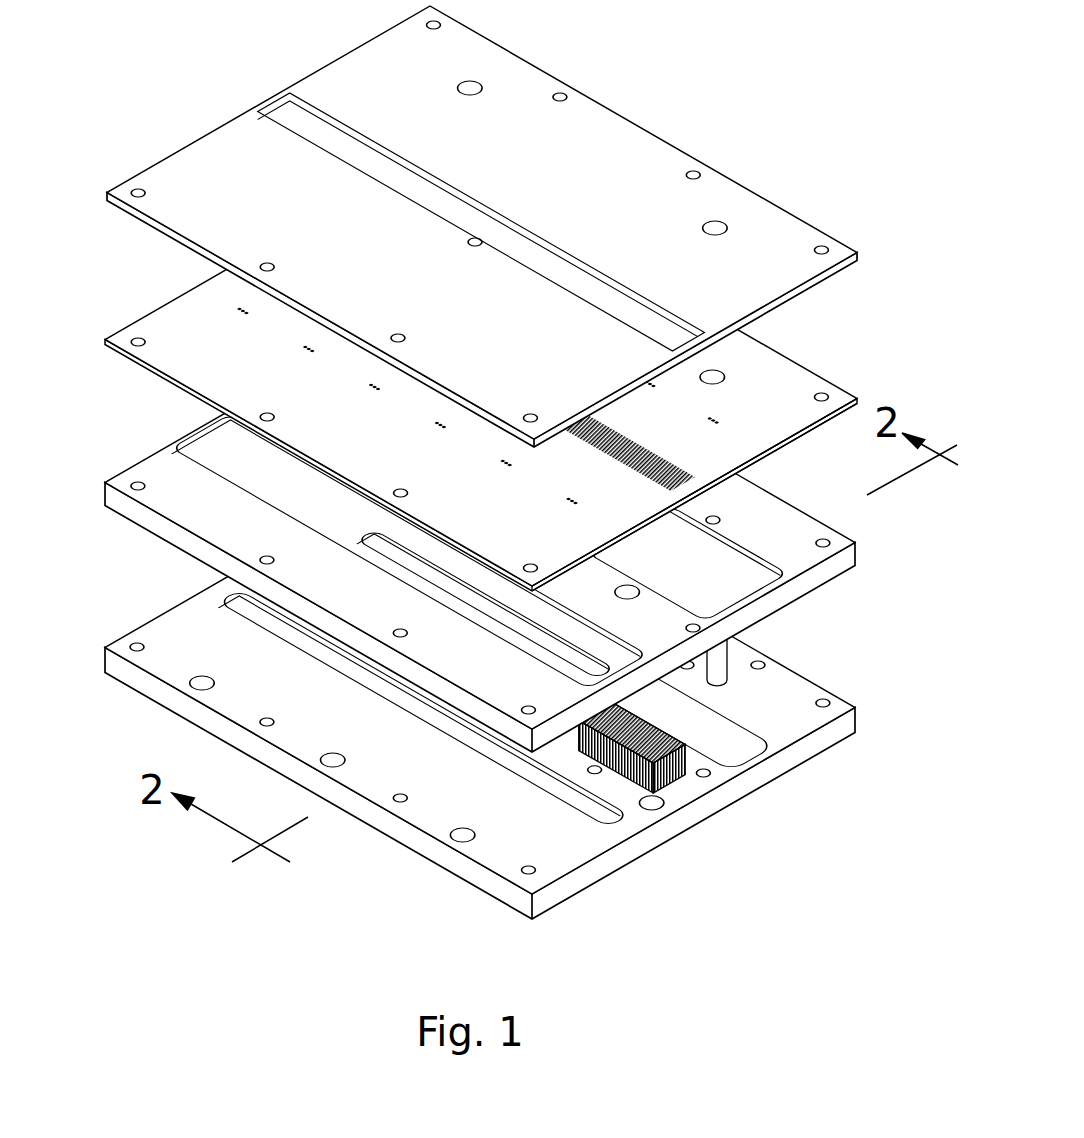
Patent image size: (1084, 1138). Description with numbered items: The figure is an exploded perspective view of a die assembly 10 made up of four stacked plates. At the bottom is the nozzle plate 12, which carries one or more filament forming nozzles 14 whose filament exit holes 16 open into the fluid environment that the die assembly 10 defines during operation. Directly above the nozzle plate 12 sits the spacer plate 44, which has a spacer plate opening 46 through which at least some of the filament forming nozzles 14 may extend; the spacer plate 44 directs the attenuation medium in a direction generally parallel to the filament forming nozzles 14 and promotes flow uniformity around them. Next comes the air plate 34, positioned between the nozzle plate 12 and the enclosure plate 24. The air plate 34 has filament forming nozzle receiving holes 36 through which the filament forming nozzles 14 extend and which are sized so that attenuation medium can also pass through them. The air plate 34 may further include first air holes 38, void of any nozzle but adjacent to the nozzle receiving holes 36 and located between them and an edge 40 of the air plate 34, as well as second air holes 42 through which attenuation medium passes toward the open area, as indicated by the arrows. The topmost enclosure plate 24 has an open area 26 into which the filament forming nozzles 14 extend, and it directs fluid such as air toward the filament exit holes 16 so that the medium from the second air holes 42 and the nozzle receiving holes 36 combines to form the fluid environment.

The die assembly 10 is at (110, 303).
The nozzle plate 12 is at (592, 870).
The filament forming nozzles 14 is at (668, 788).
The filament exit holes 16 is at (697, 728).
The enclosure plate 24 is at (627, 178).
The open area 26 is at (293, 124).
The air plate 34 is at (780, 437).
The filament forming nozzle receiving holes 36 is at (655, 455).
The first air holes 38 is at (700, 495).
The edge 40 is at (797, 445).
The second air holes 42 is at (228, 306).
The spacer plate 44 is at (207, 533).
The spacer plate opening 46 is at (295, 477).